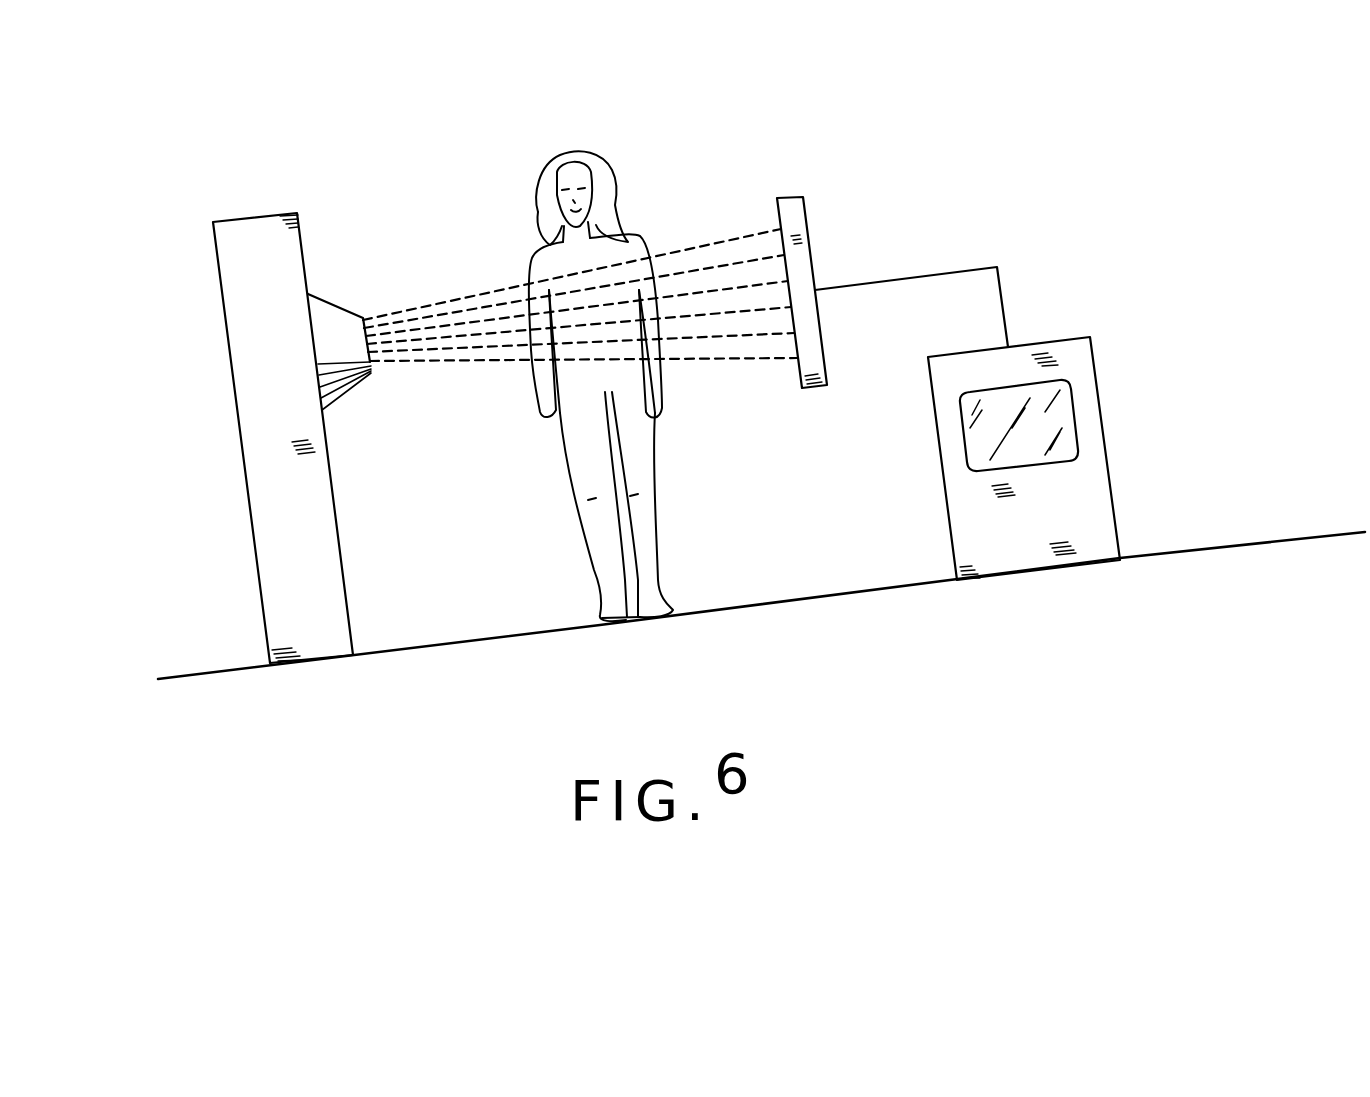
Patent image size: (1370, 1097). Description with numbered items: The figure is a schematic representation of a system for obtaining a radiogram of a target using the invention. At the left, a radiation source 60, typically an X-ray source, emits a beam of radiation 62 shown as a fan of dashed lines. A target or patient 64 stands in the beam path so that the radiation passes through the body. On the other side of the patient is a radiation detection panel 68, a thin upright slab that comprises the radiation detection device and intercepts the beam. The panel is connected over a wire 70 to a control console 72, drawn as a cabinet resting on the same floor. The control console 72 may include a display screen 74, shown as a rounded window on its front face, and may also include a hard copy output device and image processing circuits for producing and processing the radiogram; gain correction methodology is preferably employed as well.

The radiation source 60 is at (242, 222).
The beam of radiation 62 is at (462, 310).
The target or patient 64 is at (618, 153).
The radiation detection panel 68 is at (793, 197).
The wire 70 is at (930, 274).
The control console 72 is at (1068, 337).
The display screen 74 is at (1063, 412).